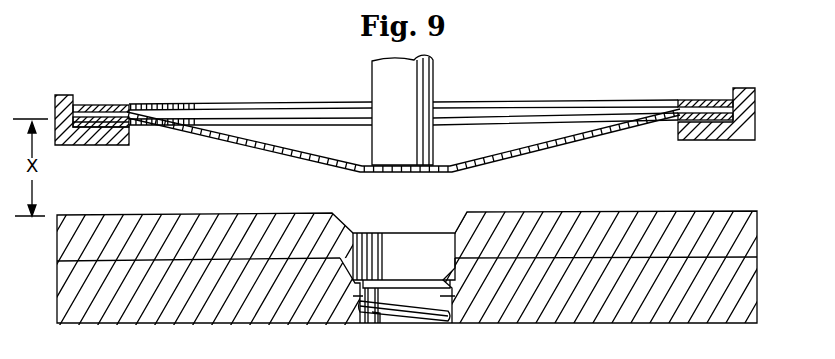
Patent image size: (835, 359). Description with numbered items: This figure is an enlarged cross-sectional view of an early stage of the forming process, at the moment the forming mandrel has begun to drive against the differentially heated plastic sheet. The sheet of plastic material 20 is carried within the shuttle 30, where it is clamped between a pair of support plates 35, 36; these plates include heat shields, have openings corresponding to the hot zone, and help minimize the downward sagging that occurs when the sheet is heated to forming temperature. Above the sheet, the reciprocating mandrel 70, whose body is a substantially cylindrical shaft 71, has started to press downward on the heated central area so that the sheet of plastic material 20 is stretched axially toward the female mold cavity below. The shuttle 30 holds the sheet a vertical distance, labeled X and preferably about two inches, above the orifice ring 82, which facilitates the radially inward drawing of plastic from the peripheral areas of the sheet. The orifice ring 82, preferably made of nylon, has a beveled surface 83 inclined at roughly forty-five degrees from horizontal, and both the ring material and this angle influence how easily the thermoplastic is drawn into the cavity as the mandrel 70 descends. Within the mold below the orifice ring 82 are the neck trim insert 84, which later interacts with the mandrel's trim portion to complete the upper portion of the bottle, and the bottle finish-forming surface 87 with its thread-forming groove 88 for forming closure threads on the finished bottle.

The sheet of plastic material 20 is at (555, 147).
The shuttle 30 is at (745, 103).
The support plate 35 is at (108, 122).
The support plate 36 is at (113, 105).
The reciprocating mandrel 70 is at (358, 82).
The substantially cylindrical shaft 71 is at (417, 90).
The orifice ring 82 is at (135, 222).
The beveled surface 83 is at (463, 222).
The neck trim insert 84 is at (338, 289).
The bottle finish-forming surface 87 is at (422, 320).
The thread-forming groove 88 is at (393, 313).